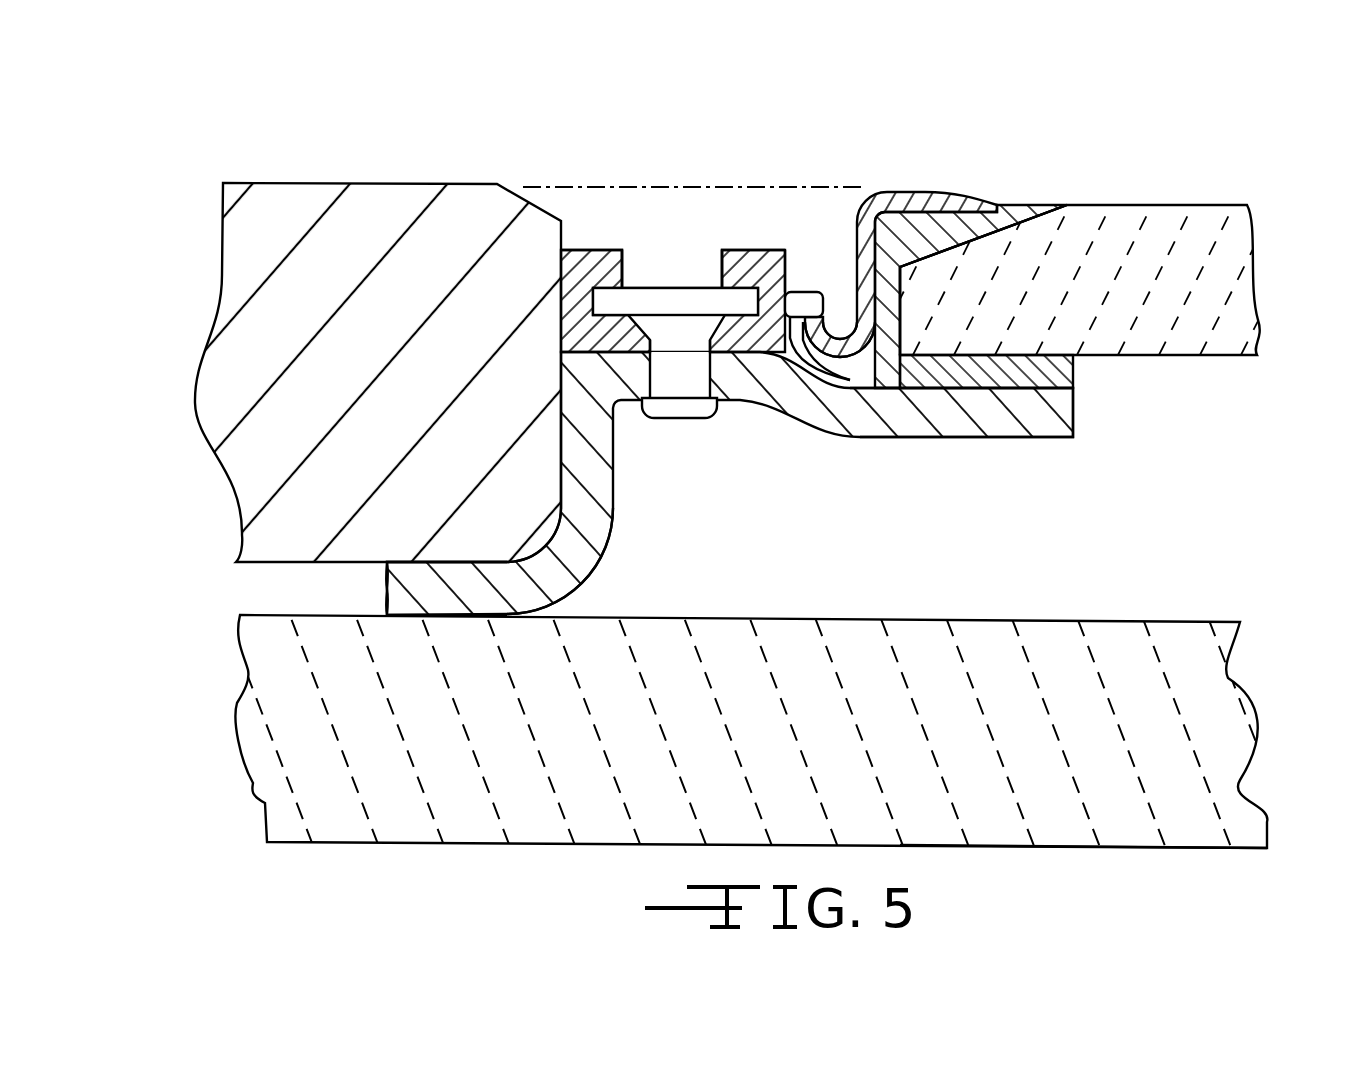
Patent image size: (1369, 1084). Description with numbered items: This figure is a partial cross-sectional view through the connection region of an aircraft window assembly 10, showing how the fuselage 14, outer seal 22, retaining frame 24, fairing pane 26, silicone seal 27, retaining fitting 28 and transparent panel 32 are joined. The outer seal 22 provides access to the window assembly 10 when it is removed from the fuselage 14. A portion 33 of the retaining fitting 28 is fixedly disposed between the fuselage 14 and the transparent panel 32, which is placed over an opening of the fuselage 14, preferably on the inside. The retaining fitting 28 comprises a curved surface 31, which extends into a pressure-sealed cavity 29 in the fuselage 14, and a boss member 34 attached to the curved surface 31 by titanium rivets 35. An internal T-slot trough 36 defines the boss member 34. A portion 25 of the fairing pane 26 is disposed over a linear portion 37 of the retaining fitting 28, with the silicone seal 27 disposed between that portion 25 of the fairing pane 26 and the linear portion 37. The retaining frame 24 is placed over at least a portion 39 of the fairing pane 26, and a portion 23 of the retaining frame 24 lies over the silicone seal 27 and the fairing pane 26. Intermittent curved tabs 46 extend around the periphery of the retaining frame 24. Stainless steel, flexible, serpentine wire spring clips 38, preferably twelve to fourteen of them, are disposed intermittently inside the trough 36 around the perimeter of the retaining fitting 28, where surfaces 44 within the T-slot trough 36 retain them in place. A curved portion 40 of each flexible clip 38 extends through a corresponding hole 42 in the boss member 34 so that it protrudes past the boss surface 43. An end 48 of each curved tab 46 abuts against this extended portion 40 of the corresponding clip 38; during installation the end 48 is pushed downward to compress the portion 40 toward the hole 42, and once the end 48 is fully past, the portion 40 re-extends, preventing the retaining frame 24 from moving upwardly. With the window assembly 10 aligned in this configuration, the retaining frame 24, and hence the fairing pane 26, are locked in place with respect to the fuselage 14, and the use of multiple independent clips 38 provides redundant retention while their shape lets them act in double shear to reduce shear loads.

The window assembly 10 is at (160, 628).
The fuselage 14 is at (258, 315).
The outer seal 22 is at (560, 185).
The portion of the retaining frame 23 is at (928, 197).
The retaining frame 24 is at (900, 190).
The portion of the fairing pane 25 is at (987, 343).
The fairing pane 26 is at (1107, 236).
The silicone seal 27 is at (940, 232).
The retaining fitting 28 is at (612, 525).
The pressure-sealed cavity 29 is at (1048, 567).
The curved surface 31 is at (537, 577).
The transparent panel 32 is at (1065, 803).
The portion of the retaining fitting 33 is at (422, 592).
The boss member 34 is at (600, 252).
The titanium rivets 35 is at (670, 412).
The T-slot trough 36 is at (690, 278).
The linear portion 37 is at (1000, 412).
The flexible spring clip 38 is at (638, 303).
The portion of the fairing pane 39 is at (933, 285).
The curved portion 40 is at (797, 297).
The hole 42 is at (790, 292).
The boss surface 43 is at (860, 335).
The surfaces 44 is at (621, 256).
The curved tab 46 is at (868, 358).
The end of the curved tab 48 is at (797, 322).